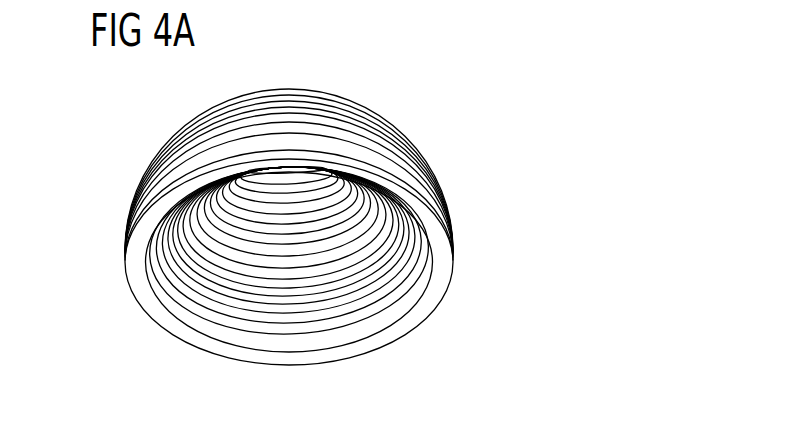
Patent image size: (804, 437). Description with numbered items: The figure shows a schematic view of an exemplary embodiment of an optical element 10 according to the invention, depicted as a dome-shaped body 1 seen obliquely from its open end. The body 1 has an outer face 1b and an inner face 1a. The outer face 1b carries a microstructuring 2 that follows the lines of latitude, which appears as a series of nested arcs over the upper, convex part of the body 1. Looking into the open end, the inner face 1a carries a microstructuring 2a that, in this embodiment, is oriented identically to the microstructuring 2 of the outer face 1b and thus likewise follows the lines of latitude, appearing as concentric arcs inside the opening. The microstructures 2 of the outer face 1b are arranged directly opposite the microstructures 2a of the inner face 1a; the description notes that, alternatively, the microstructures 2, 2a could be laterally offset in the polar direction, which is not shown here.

The optical element 10 is at (440, 68).
The sleeve body 1 is at (126, 294).
The inner face 1a is at (302, 345).
The outer face 1b is at (160, 184).
The microstructuring of the outer face 2 is at (284, 100).
The microstructuring of the inner face 2a is at (243, 330).